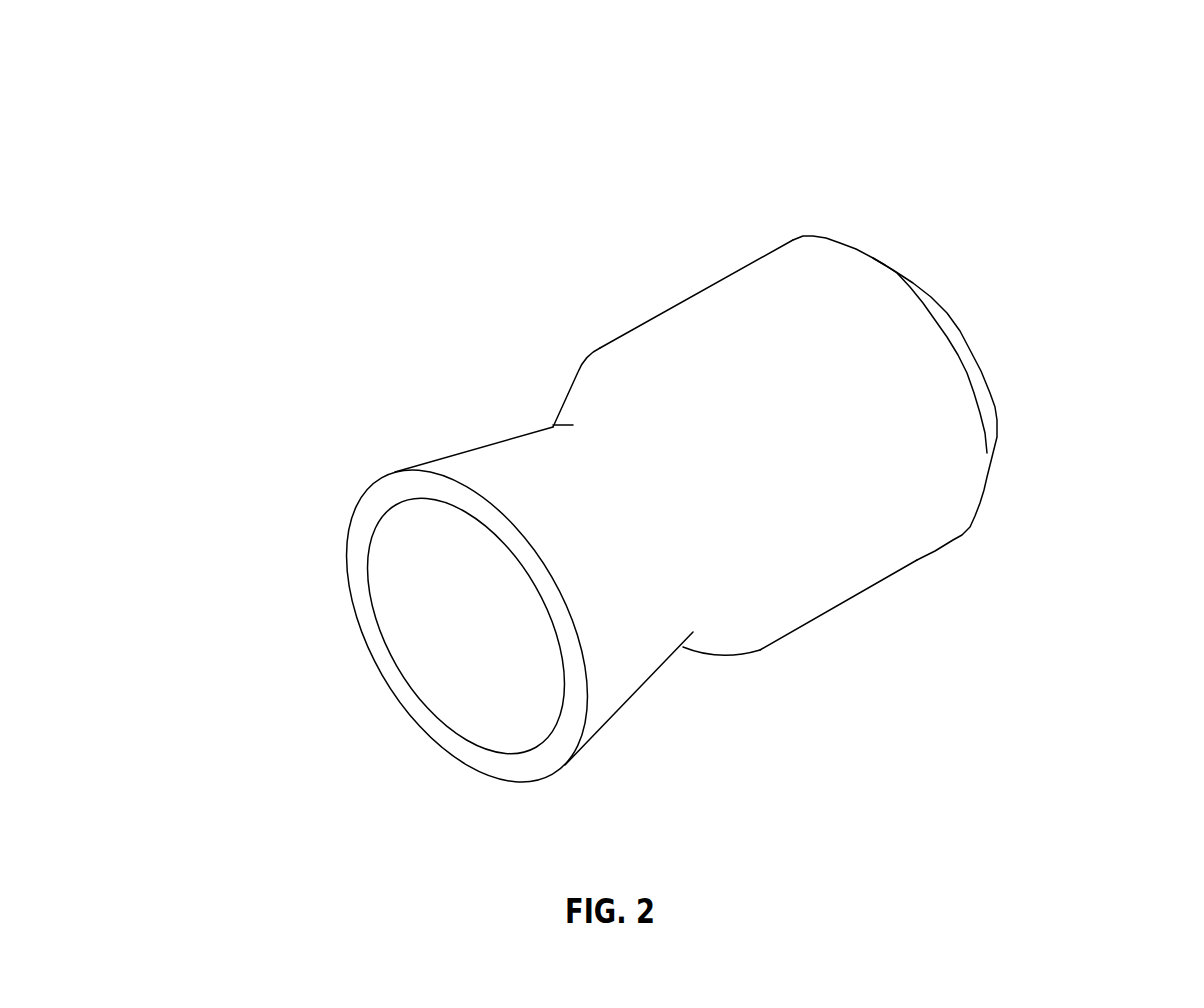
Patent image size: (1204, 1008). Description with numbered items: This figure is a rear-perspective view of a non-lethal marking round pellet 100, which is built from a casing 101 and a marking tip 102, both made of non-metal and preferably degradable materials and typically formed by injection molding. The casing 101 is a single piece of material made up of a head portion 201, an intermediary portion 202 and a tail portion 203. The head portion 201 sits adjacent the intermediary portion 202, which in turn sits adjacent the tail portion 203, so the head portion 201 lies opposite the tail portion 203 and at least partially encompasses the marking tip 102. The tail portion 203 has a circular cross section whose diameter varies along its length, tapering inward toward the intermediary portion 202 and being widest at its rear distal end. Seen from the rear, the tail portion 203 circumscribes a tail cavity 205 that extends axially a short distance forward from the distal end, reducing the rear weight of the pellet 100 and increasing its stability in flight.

The non-lethal marking round pellet 100 is at (838, 82).
The casing 101 is at (840, 222).
The marking tip 102 is at (972, 328).
The head portion 201 is at (840, 565).
The intermediary portion 202 is at (707, 632).
The tail portion 203 is at (618, 632).
The tail cavity 205 is at (427, 652).